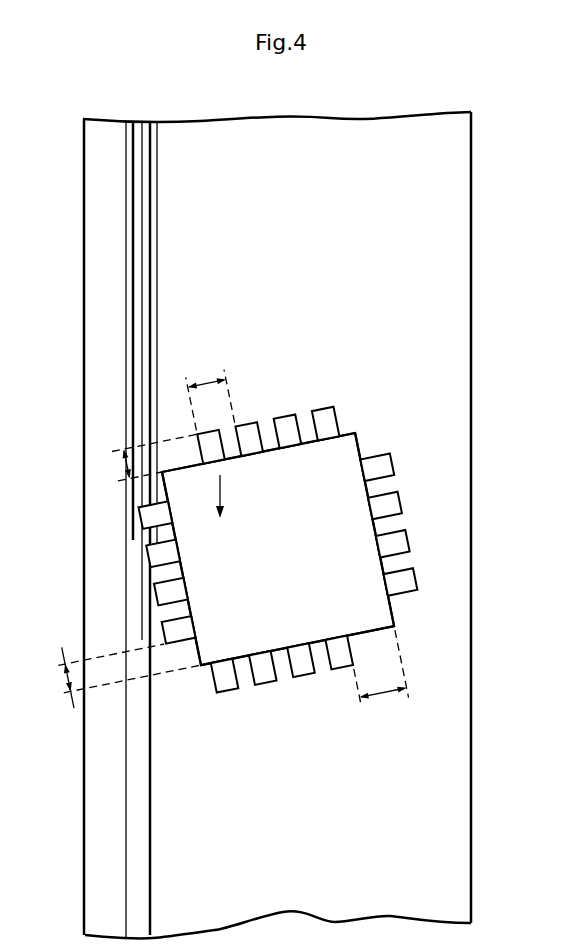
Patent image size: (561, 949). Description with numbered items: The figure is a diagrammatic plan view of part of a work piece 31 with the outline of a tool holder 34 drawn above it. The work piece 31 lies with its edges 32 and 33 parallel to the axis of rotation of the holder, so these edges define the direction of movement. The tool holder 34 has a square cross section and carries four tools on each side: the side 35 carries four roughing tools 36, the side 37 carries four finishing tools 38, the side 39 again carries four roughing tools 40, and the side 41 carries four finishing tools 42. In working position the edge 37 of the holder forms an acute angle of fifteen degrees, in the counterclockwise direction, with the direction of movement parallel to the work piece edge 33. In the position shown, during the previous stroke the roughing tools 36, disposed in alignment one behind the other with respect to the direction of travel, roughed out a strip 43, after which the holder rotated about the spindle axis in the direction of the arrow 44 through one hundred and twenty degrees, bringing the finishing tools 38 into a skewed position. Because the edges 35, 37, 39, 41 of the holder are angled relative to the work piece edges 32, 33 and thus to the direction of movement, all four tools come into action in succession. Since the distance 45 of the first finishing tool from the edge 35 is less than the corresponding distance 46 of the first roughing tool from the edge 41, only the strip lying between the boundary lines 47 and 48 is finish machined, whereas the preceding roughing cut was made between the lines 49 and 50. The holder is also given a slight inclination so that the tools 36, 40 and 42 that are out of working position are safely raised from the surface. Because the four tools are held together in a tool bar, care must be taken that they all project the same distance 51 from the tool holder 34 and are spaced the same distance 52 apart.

The work piece 31 is at (437, 172).
The edge of the work piece 32 is at (471, 228).
The edge of the work piece 33 is at (84, 220).
The tool holder 34 is at (332, 465).
The side of the tool holder 35 is at (293, 626).
The roughing tools 36 is at (220, 677).
The side of the tool holder 37 is at (181, 562).
The finishing tools 38 is at (172, 630).
The side of the tool holder 39 is at (276, 452).
The roughing tools 40 is at (328, 420).
The side of the tool holder 41 is at (372, 531).
The finishing tools 42 is at (375, 465).
The strip 43 is at (138, 886).
The arrow 44 is at (215, 495).
The distance 45 is at (60, 683).
The distance 46 is at (380, 699).
The boundary line 47 is at (157, 275).
The boundary line 48 is at (133, 275).
The line 49 is at (150, 833).
The line 50 is at (126, 833).
The distance 51 is at (118, 463).
The distance 52 is at (211, 381).